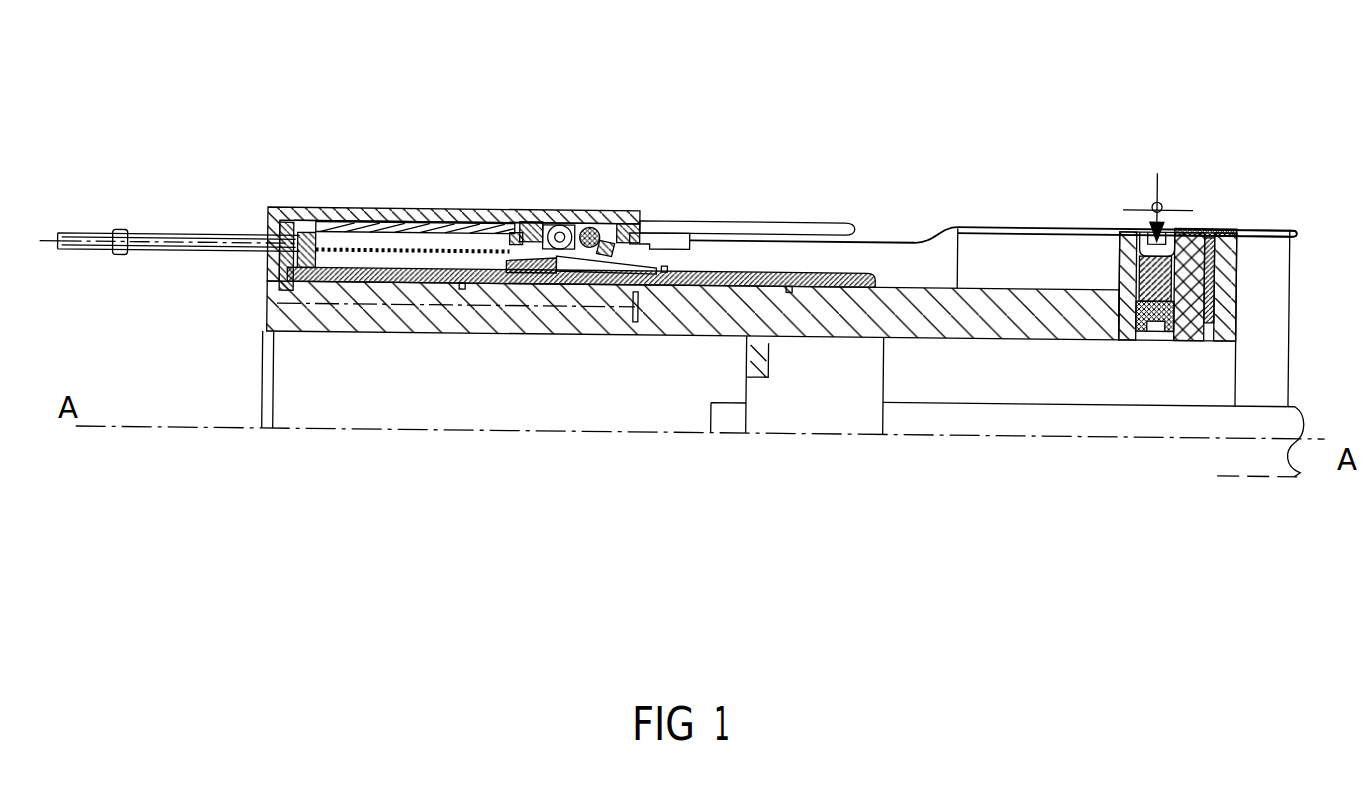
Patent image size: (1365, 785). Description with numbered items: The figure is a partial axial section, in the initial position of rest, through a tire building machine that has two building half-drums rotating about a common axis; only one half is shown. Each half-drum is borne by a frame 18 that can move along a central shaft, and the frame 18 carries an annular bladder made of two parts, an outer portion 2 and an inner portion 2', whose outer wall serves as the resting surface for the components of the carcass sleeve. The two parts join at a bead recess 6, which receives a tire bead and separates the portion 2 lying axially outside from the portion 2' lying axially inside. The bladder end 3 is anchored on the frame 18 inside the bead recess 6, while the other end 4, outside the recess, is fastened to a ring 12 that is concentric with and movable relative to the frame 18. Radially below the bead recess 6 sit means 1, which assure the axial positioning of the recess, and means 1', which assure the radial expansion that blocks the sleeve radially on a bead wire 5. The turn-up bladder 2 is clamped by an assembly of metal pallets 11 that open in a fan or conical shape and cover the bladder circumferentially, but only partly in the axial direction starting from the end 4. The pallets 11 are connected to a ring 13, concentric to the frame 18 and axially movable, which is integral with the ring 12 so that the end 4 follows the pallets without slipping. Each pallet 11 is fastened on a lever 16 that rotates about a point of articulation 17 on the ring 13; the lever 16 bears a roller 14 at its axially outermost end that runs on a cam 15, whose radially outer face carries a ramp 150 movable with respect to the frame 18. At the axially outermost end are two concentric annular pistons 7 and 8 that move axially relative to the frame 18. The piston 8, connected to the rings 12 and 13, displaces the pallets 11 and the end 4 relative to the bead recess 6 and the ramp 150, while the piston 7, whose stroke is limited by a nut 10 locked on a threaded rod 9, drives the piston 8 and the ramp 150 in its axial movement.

The axial positioning means 1 is at (1180, 221).
The radial expansion means 1' is at (1221, 195).
The bladder portion (turn-up bladder) 2 is at (993, 165).
The bladder portion 2' is at (1301, 177).
The bladder end 3 is at (1240, 243).
The bladder end 4 is at (645, 255).
The bead wire 5 is at (1160, 208).
The bead recess 6 is at (1147, 209).
The annular piston 7 is at (356, 207).
The annular piston 8 is at (433, 250).
The threaded rod 9 is at (222, 224).
The nut 10 is at (117, 231).
The metal pallets 11 is at (852, 225).
The ring 12 is at (695, 235).
The ring 13 is at (530, 222).
The roller 14 is at (573, 222).
The cam 15 is at (546, 298).
The lever 16 is at (634, 222).
The point of articulation 17 is at (583, 222).
The frame 18 is at (1058, 328).
The ramp 150 is at (623, 222).